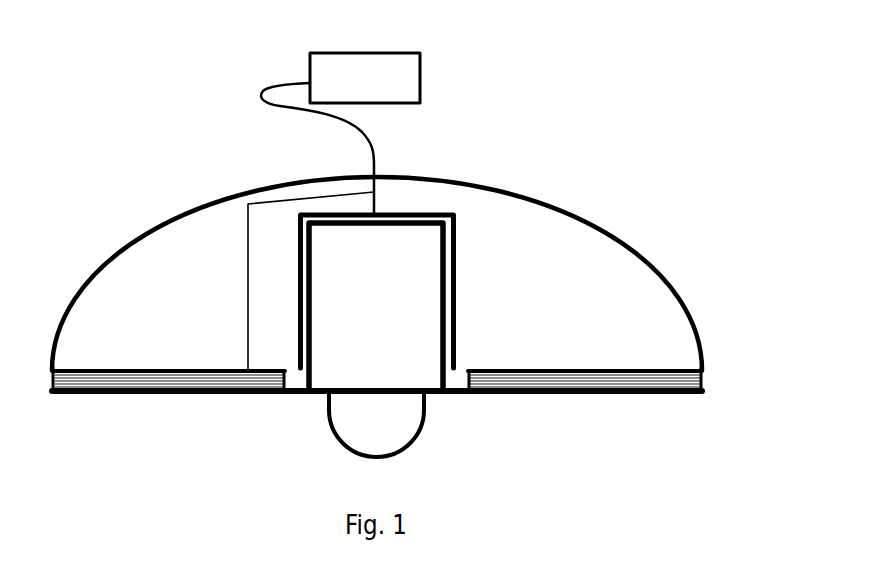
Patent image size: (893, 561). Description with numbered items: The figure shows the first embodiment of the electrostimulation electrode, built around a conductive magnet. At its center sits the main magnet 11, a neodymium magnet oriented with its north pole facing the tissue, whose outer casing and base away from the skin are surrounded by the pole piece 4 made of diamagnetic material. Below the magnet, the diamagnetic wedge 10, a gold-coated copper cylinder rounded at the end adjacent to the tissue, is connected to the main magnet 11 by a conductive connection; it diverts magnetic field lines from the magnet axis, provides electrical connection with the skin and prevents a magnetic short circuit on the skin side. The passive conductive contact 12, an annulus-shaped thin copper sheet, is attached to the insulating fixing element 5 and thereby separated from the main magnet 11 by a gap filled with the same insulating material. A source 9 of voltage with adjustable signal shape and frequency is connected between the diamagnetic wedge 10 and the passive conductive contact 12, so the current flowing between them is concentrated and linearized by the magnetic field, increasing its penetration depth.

The pole piece 4 is at (307, 213).
The fixing element 5 is at (542, 273).
The source of voltage 9 is at (400, 83).
The diamagnetic wedge 10 is at (385, 425).
The main magnet 11 is at (330, 348).
The passive conductive contact 12 is at (607, 383).